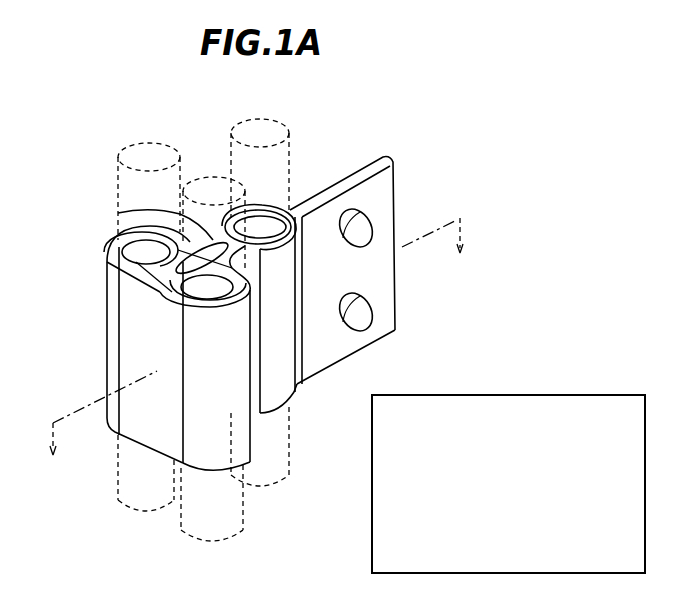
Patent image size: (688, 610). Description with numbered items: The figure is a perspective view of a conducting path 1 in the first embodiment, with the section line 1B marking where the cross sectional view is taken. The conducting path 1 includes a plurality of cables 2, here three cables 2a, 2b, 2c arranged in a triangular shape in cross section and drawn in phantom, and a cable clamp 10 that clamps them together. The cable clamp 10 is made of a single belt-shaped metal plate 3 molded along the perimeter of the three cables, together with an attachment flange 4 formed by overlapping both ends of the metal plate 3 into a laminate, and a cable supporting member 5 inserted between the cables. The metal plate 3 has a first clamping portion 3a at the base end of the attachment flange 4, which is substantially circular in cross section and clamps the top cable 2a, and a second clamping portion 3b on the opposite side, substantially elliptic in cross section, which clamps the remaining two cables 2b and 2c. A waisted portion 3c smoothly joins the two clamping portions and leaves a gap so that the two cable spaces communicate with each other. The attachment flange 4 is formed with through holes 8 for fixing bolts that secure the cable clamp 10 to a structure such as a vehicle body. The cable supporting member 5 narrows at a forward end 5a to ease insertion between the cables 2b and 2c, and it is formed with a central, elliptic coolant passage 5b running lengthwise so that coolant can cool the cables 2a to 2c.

The conducting path 1 is at (479, 124).
The cables 2 is at (289, 128).
The cable 2a is at (258, 122).
The cable 2b is at (148, 146).
The cable 2c is at (214, 180).
The metal plate 3 is at (236, 437).
The first clamping portion 3a is at (297, 393).
The second clamping portion 3b is at (158, 430).
The waisted portion 3c is at (118, 213).
The attachment flange 4 is at (383, 333).
The cable supporting member 5 is at (108, 262).
The forward end 5a is at (178, 258).
The coolant passage 5b is at (120, 233).
The through holes 8 is at (366, 216).
The cable clamp 10 is at (390, 154).
The section line 1B is at (257, 338).